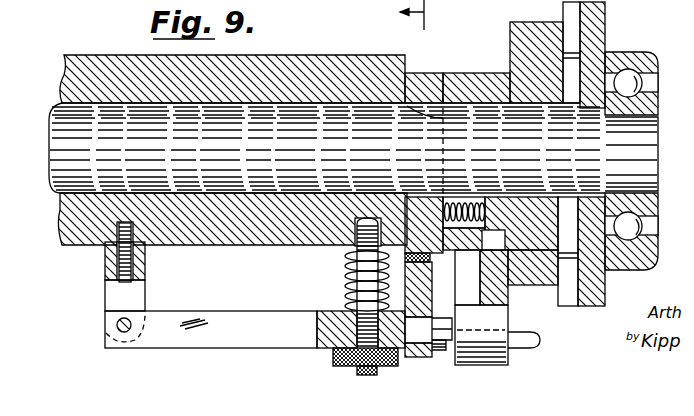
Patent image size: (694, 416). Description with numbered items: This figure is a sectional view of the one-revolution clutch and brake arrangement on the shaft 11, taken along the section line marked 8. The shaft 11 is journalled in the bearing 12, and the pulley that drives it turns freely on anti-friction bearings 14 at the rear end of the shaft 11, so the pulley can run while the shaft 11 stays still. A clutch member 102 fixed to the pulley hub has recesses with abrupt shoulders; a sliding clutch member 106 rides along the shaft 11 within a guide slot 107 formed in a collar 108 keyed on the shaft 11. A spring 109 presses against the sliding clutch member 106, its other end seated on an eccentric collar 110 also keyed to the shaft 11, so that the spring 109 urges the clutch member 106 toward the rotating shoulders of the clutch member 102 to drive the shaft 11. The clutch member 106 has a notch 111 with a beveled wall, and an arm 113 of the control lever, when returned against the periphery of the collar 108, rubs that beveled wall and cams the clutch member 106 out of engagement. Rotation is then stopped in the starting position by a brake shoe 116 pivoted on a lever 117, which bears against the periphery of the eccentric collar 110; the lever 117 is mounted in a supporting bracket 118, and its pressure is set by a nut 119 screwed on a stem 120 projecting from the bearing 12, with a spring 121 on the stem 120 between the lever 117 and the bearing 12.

The section line indicator 8 is at (421, 15).
The shaft 11 is at (647, 141).
The bearing 12 is at (297, 68).
The anti-friction bearings 14 is at (632, 83).
The clutch member 102 is at (587, 30).
The sliding clutch member 106 is at (522, 210).
The guide slot 107 is at (522, 284).
The collar 108 is at (494, 63).
The spring 109 is at (466, 202).
The eccentric collar 110 is at (438, 57).
The notch 111 is at (490, 238).
The arm 113 is at (509, 306).
The brake shoe 116 is at (425, 292).
The lever 117 is at (275, 321).
The supporting bracket 118 is at (145, 270).
The nut 119 is at (397, 359).
The stem 120 is at (358, 235).
The spring 121 is at (348, 294).